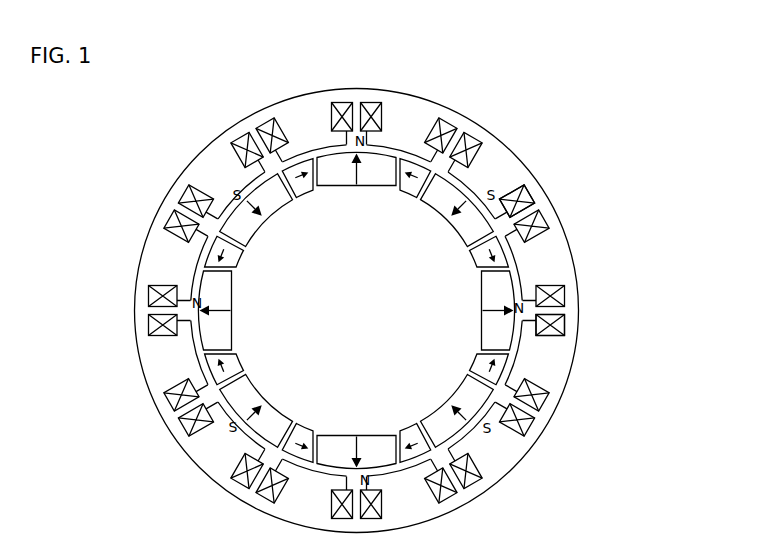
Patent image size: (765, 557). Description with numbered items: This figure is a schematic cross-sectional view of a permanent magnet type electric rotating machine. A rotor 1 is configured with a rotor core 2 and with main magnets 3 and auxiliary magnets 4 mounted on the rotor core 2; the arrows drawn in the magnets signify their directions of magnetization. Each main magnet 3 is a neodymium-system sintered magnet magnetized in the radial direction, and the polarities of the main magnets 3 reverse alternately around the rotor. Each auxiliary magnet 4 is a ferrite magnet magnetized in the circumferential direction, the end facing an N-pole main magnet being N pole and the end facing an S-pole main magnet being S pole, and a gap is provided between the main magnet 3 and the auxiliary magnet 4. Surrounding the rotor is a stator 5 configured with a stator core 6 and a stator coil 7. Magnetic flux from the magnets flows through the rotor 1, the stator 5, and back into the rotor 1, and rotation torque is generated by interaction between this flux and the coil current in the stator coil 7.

The rotor 1 is at (431, 311).
The rotor core 2 is at (417, 253).
The main magnet 3 is at (505, 190).
The auxiliary magnet 4 is at (508, 243).
The stator 5 is at (462, 310).
The stator core 6 is at (540, 268).
The stator coil 7 is at (553, 315).